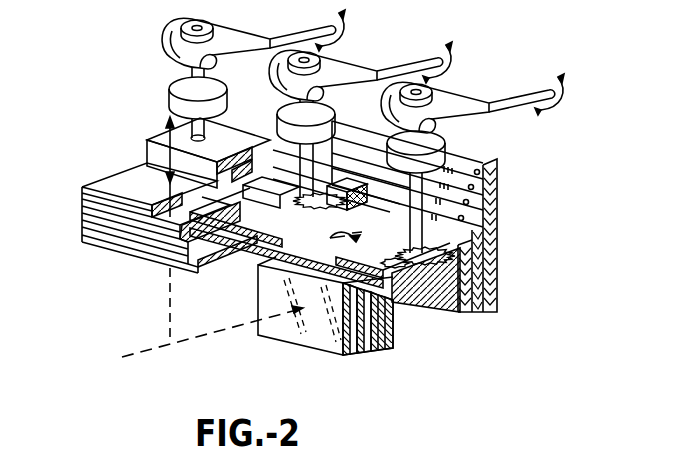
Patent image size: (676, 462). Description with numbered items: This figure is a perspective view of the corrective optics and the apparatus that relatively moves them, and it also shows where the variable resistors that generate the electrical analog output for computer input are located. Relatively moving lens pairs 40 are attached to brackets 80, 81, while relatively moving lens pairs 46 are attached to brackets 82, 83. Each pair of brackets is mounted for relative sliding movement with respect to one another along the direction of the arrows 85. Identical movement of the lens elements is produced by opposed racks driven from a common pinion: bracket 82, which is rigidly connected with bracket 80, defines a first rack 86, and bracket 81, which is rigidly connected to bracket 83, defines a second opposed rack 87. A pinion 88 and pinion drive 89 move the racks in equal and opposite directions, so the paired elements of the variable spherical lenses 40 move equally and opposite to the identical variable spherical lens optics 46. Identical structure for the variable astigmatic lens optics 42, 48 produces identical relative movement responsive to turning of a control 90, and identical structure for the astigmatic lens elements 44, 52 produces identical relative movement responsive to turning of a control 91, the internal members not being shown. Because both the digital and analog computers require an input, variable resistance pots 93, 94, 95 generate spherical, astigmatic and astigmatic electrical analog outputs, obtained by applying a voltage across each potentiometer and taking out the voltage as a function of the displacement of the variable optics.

The relatively moving lens pairs 40 is at (353, 359).
The variable astigmatic lens optics 42 is at (368, 363).
The lens elements 44 is at (393, 352).
The relatively moving lens pairs 46 is at (73, 223).
The variable astigmatic lens optics 48 is at (73, 203).
The lens elements 52 is at (73, 185).
The bracket 80 is at (455, 312).
The bracket 81 is at (481, 312).
The bracket 82 is at (403, 259).
The bracket 83 is at (283, 247).
The arrows 85 is at (342, 243).
The first rack 86 is at (433, 264).
The second opposed rack 87 is at (462, 253).
The pinion 88 is at (485, 238).
The pinion drive 89 is at (462, 97).
The control 90 is at (350, 65).
The control 91 is at (262, 34).
The variable resistance pot 93 is at (446, 147).
The variable resistance pot 94 is at (336, 116).
The variable resistance pot 95 is at (226, 92).